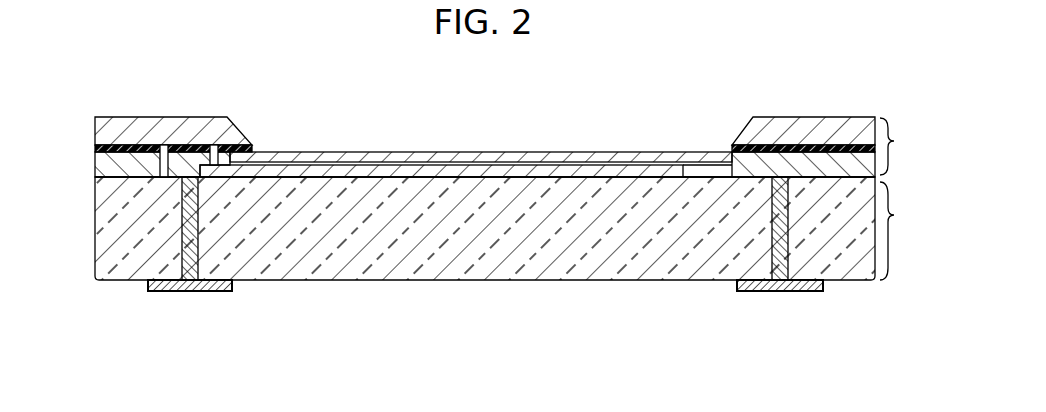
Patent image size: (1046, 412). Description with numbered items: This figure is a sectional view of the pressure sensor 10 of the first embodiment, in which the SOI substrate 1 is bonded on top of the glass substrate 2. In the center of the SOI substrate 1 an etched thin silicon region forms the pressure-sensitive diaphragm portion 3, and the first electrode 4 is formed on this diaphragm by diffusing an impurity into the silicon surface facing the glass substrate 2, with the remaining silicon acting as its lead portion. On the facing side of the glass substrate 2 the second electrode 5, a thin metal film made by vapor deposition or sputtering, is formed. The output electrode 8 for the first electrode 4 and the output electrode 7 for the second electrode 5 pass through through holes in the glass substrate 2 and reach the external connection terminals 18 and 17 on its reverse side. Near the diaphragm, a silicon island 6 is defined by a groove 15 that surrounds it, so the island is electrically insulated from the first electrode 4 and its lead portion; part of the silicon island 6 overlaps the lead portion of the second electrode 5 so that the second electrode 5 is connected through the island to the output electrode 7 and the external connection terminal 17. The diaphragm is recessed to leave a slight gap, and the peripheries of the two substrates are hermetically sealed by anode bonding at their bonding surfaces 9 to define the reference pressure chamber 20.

The SOI substrate 1 is at (501, 126).
The glass substrate 2 is at (501, 228).
The pressure-sensitive diaphragm portion 3 is at (481, 122).
The first electrode 4 is at (388, 156).
The second electrode 5 is at (490, 167).
The silicon island 6 is at (198, 155).
The output electrode 7 is at (185, 248).
The output electrode 8 is at (788, 256).
The bonding surfaces 9 is at (875, 177).
The pressure sensor 10 is at (517, 207).
The groove 15 is at (163, 147).
The external connection terminal 17 is at (185, 292).
The external connection terminal 18 is at (773, 292).
The reference pressure chamber 20 is at (693, 165).